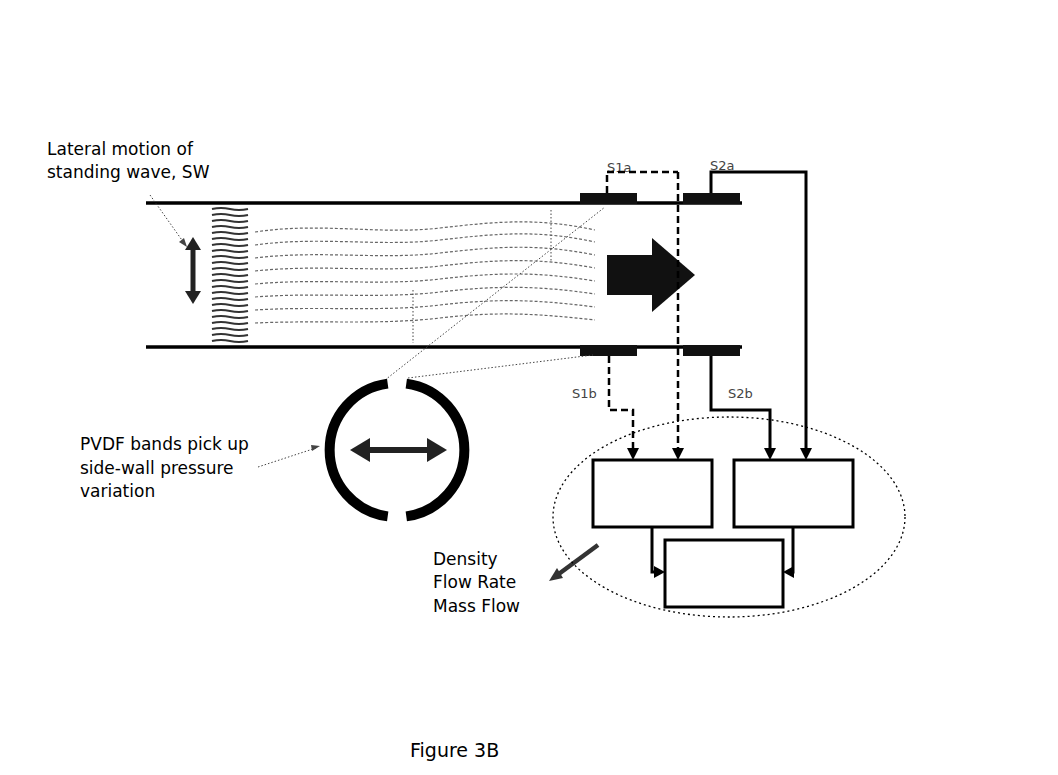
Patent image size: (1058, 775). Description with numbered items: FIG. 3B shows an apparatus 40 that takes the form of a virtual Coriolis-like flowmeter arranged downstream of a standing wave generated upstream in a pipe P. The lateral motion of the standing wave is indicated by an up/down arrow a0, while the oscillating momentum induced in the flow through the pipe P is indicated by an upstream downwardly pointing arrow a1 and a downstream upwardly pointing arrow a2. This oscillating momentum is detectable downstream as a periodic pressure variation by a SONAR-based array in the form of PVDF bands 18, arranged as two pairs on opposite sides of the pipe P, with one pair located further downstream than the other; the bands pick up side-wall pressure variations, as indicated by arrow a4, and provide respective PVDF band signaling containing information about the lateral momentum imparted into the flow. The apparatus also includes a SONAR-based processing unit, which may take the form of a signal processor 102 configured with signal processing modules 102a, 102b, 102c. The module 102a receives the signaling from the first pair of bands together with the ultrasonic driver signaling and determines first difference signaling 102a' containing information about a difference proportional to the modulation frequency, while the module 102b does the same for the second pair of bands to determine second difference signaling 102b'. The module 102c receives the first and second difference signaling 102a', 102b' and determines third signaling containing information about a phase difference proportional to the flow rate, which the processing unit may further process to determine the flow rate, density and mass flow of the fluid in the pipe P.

The apparatus 40 is at (82, 99).
The pipe P is at (375, 201).
The PVDF bands 18 is at (593, 196).
The up/down arrow a0 is at (193, 266).
The upstream downwardly pointing arrow a1 is at (413, 313).
The downstream upwardly pointing arrow a2 is at (551, 232).
The arrow a4 is at (400, 458).
The signal processor 102 is at (813, 603).
The signal processing module 102a is at (638, 552).
The first difference signaling 102a' is at (626, 609).
The signal processing module 102b is at (830, 527).
The second difference signaling 102b' is at (844, 584).
The signal processing module 102c is at (718, 607).